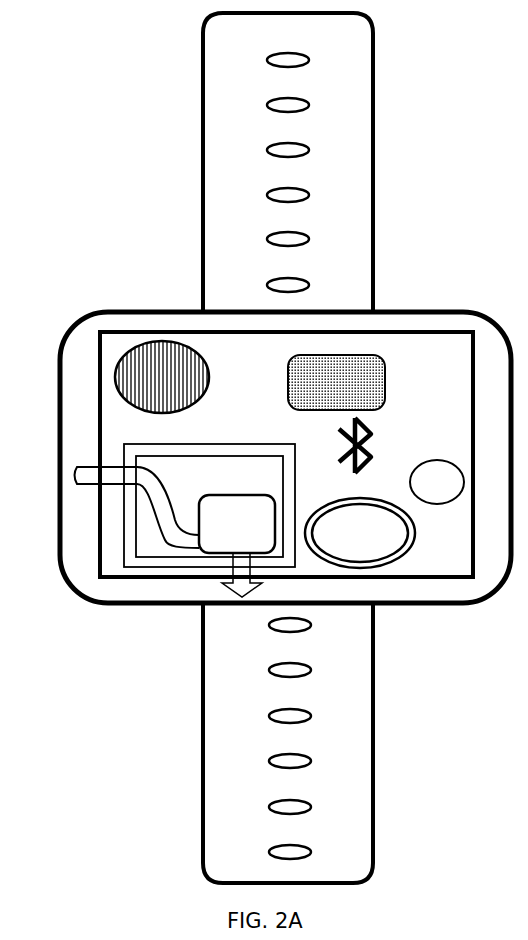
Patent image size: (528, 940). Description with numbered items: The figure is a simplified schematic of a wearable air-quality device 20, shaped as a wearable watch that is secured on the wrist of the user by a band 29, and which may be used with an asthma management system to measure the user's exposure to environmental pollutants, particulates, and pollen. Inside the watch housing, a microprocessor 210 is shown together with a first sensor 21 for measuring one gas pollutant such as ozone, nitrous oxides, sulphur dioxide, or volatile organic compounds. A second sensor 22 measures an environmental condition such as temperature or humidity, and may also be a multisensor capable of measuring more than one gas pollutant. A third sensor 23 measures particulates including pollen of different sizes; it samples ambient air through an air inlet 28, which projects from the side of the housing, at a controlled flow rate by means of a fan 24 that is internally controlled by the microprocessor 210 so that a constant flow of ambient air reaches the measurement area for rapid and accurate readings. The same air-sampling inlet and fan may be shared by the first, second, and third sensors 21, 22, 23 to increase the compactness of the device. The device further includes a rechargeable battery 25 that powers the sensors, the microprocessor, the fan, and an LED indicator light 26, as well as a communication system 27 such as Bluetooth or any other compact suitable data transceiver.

The wearable air-quality device 20 is at (252, 448).
The band 29 is at (268, 456).
The microprocessor 210 is at (286, 454).
The first sensor 21 is at (183, 377).
The second sensor 22 is at (358, 382).
The third sensor 23 is at (209, 493).
The fan 24 is at (237, 535).
The rechargeable battery 25 is at (360, 533).
The LED indicator light 26 is at (437, 482).
The communication system 27 is at (374, 445).
The air inlet 28 is at (111, 507).